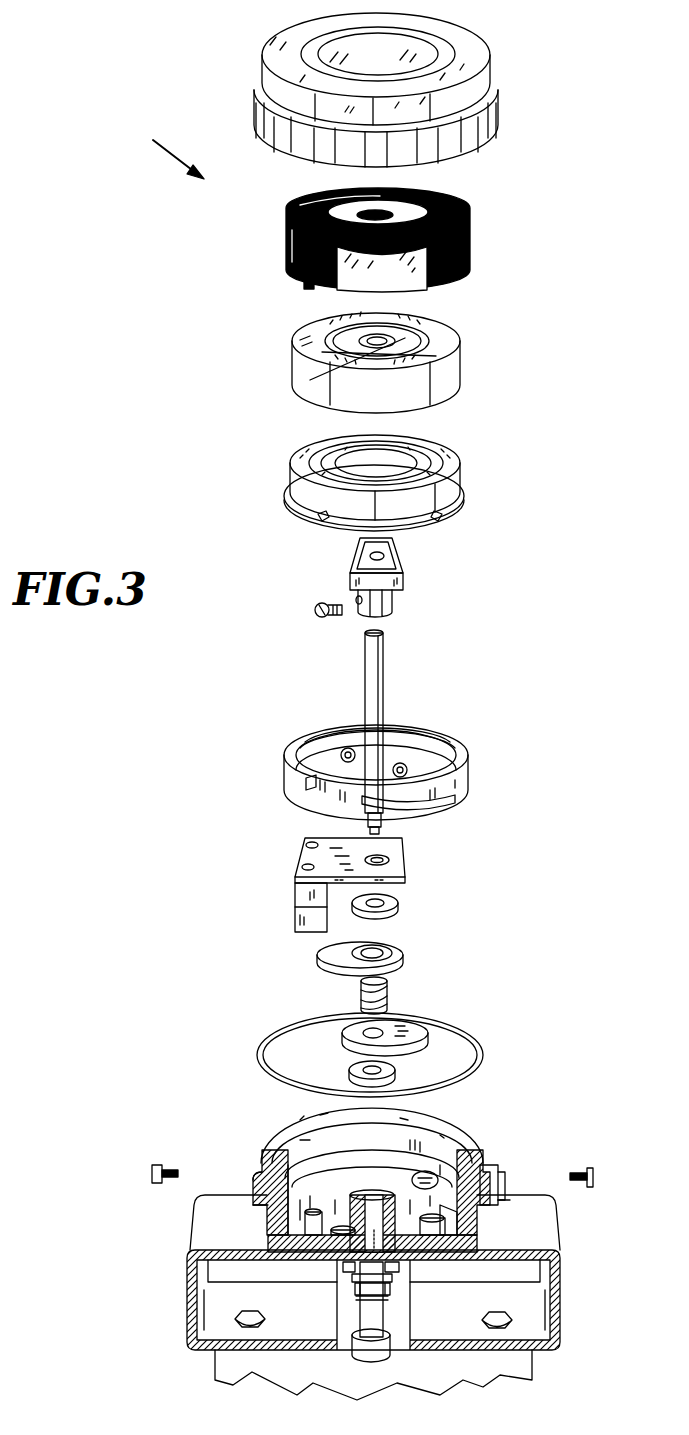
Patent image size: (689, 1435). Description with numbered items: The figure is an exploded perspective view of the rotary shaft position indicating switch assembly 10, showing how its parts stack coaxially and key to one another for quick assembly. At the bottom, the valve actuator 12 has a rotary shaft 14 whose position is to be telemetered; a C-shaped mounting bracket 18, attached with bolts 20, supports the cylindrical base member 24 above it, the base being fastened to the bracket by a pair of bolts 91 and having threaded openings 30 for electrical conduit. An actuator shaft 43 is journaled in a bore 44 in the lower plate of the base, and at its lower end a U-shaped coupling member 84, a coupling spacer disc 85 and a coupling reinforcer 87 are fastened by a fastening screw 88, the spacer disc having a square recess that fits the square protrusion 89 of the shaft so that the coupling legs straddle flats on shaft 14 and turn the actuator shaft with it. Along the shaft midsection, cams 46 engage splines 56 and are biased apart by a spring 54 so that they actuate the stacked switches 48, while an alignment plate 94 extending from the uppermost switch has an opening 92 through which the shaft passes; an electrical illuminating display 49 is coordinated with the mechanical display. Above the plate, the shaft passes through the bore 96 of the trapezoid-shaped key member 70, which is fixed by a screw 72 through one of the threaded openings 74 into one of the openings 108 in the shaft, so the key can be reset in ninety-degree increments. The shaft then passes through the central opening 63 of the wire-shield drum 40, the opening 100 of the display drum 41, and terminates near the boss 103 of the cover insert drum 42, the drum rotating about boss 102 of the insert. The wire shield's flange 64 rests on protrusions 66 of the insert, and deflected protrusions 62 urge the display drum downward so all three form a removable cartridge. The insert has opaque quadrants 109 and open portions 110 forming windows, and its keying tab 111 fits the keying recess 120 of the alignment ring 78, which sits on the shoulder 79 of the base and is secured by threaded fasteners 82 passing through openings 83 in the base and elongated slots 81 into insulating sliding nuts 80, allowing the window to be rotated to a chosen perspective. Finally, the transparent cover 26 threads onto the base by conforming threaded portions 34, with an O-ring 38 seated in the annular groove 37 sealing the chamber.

The rotary shaft position indicating switch assembly 10 is at (162, 148).
The valve actuator 12 is at (527, 1372).
The rotary shaft 14 is at (373, 1310).
The C-shaped mounting bracket 18 is at (397, 1300).
The bolts 20 is at (512, 1324).
The base member 24 is at (521, 1184).
The transparent cover 26 is at (490, 70).
The threaded openings 30 is at (490, 1165).
The threaded portions 34 is at (374, 1172).
The annular groove 37 is at (255, 1190).
The O-ring 38 is at (485, 1058).
The wire-shield drum 40 is at (402, 490).
The display drum 41 is at (296, 347).
The cover insert drum 42 is at (379, 248).
The actuator shaft 43 is at (383, 738).
The bore 44 is at (372, 1194).
The cams 46 is at (420, 1032).
The switches 48 is at (296, 915).
The electrical illuminating display 49 is at (478, 1215).
The spring 54 is at (358, 995).
The splines 56 is at (396, 1075).
The protrusions 62 is at (320, 353).
The central opening 63 is at (413, 462).
The flange 64 is at (465, 505).
The protrusions 66 is at (438, 522).
The key member 70 is at (388, 600).
The screw 72 is at (313, 612).
The threaded openings 74 is at (360, 616).
The alignment ring 78 is at (364, 761).
The shoulder 79 is at (432, 1172).
The sliding nuts 80 is at (408, 771).
The elongated slots 81 is at (440, 800).
The threaded fasteners 82 is at (596, 1178).
The openings 83 is at (287, 1163).
The U-shaped coupling member 84 is at (392, 1293).
The coupling spacer disc 85 is at (400, 1268).
The coupling reinforcer 87 is at (352, 1280).
The fastening screw 88 is at (358, 1300).
The square protrusion 89 is at (385, 828).
The bolts 91 is at (340, 1268).
The opening 92 is at (387, 862).
The alignment plate 94 is at (347, 884).
The bore 96 is at (352, 562).
The opening 100 is at (373, 367).
The boss 102 is at (340, 358).
The boss 103 is at (300, 208).
The openings 108 is at (360, 673).
The opaque quadrants 109 is at (288, 242).
The open portions 110 is at (385, 275).
The keying tab 111 is at (303, 283).
The keying recess 120 is at (300, 786).